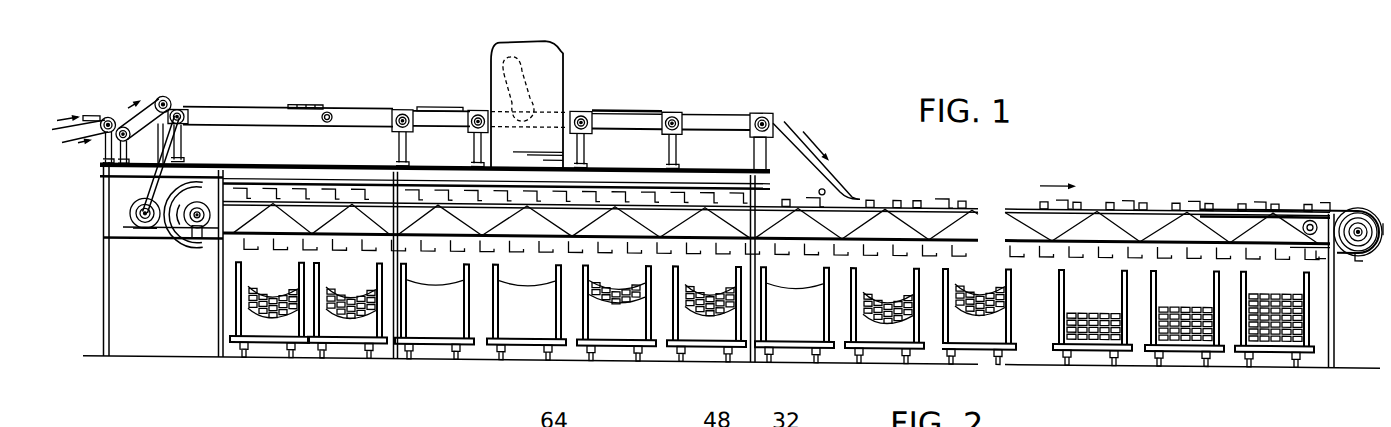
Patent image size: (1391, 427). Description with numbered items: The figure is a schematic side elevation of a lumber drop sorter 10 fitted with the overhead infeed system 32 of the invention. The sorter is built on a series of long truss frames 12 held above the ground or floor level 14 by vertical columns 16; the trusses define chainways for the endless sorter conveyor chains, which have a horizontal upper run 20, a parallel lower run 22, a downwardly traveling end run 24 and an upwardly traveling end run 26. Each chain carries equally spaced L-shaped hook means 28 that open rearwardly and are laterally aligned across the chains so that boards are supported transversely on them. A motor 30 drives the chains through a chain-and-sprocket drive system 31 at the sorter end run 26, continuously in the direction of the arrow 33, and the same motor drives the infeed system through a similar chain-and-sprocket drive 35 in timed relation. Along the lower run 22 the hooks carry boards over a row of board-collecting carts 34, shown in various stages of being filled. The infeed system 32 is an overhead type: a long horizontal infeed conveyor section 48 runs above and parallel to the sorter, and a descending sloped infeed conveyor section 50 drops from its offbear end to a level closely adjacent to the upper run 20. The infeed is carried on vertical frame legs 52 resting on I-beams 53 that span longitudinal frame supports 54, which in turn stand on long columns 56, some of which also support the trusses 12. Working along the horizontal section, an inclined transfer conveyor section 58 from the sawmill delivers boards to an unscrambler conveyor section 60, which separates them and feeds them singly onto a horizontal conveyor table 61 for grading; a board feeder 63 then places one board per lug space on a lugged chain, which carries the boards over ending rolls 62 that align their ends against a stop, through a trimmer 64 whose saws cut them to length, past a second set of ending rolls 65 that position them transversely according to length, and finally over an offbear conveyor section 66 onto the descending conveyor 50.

The lumber drop sorter 10 is at (1130, 178).
The truss frames 12 is at (1180, 200).
The ground or floor level 14 is at (1340, 356).
The vertical columns 16 is at (1335, 290).
The upper run 20 is at (940, 194).
The lower run 22 is at (936, 238).
The downwardly traveling end run 24 is at (1367, 201).
The upwardly traveling end run 26 is at (205, 252).
The hook means 28 is at (1013, 193).
The motor 30 is at (130, 224).
The chain-and-sprocket drive system 31 is at (176, 228).
The sorter infeed system 32 is at (700, 86).
The arrow 33 is at (1058, 176).
The carts 34 is at (310, 266).
The chain-and-sprocket drive 35 is at (140, 194).
The horizontal infeed conveyor section 48 is at (587, 92).
The descending sloped infeed conveyor section 50 is at (789, 122).
The vertical frame legs 52 is at (668, 143).
The I-beams 53 is at (669, 161).
The longitudinal frame supports 54 is at (730, 157).
The long columns 56 is at (218, 304).
The inclined transfer conveyor section 58 is at (103, 120).
The unscrambler conveyor section 60 is at (142, 100).
The horizontal conveyor table 61 is at (241, 107).
The ending rolls 62 is at (433, 105).
The board feeder 63 is at (328, 105).
The trimmer 64 is at (489, 64).
The ending rolls 65 is at (624, 106).
The offbear conveyor section 66 is at (716, 110).